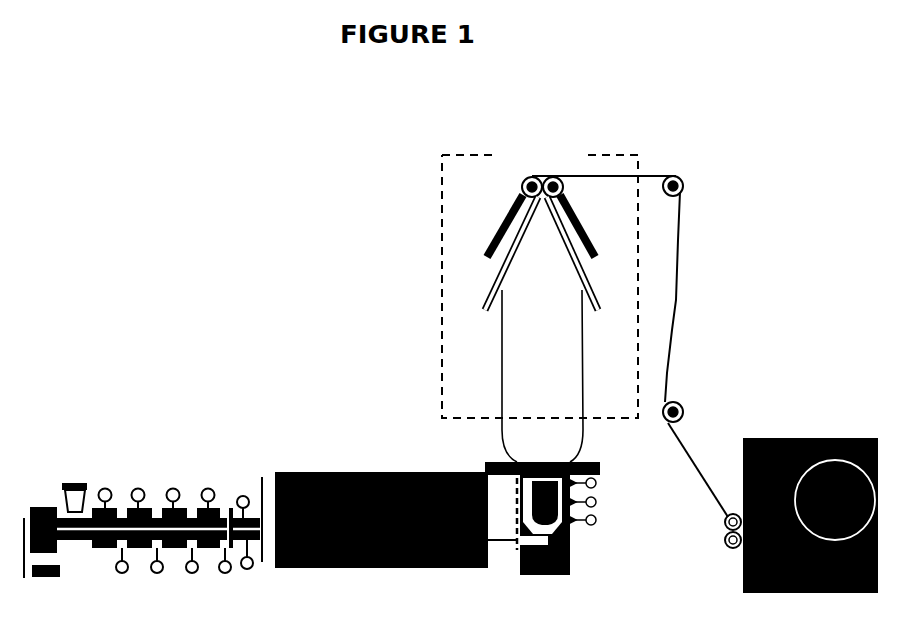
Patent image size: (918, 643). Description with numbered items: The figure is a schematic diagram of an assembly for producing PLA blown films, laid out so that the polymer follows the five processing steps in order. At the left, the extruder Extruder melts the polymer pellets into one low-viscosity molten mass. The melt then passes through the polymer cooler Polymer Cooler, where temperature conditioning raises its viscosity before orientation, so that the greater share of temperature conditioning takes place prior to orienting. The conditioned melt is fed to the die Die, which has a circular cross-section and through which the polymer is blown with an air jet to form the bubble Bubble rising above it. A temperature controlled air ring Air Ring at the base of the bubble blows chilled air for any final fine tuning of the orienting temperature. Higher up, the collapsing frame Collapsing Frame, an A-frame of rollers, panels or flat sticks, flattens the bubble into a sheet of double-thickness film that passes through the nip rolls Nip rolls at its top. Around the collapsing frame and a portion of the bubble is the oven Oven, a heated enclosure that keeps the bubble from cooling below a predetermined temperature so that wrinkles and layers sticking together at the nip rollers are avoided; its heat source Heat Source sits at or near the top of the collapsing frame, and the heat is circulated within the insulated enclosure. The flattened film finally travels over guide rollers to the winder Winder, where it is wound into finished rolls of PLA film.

The nip rolls Nip rolls is at (512, 196).
The heat source Heat Source is at (587, 213).
The collapsing frame Collapsing Frame is at (482, 268).
The oven Oven is at (645, 295).
The bubble Bubble is at (499, 367).
The air ring Air Ring is at (481, 459).
The polymer cooler Polymer Cooler is at (381, 520).
The die Die is at (599, 506).
The extruder Extruder is at (143, 505).
The winder Winder is at (810, 503).